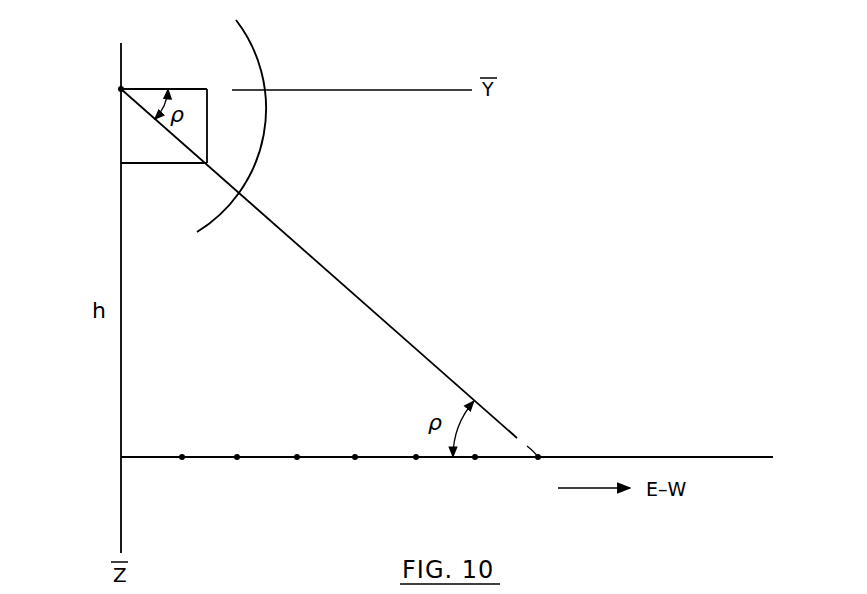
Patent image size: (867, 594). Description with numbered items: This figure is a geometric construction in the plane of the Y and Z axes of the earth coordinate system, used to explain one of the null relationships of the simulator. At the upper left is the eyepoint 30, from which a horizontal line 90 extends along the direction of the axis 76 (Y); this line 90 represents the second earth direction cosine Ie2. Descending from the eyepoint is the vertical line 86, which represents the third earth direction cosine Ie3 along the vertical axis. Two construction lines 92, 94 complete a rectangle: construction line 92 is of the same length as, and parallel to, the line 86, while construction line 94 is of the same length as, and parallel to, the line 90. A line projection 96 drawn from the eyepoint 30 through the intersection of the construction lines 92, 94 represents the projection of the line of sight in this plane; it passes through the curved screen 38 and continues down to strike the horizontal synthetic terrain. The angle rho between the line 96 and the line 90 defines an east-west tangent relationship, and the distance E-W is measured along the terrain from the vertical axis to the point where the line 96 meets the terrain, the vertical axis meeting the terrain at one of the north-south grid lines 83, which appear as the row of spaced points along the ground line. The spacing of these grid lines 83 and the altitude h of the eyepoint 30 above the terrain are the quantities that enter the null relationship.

The eyepoint 30 is at (121, 89).
The line 90 is at (196, 86).
The construction line 92 is at (207, 113).
The construction line 94 is at (166, 163).
The line 86 is at (120, 160).
The line projection 96 is at (364, 307).
The screen 38 is at (265, 70).
The axis 76 is at (376, 90).
The north-south grid lines 83 is at (538, 457).